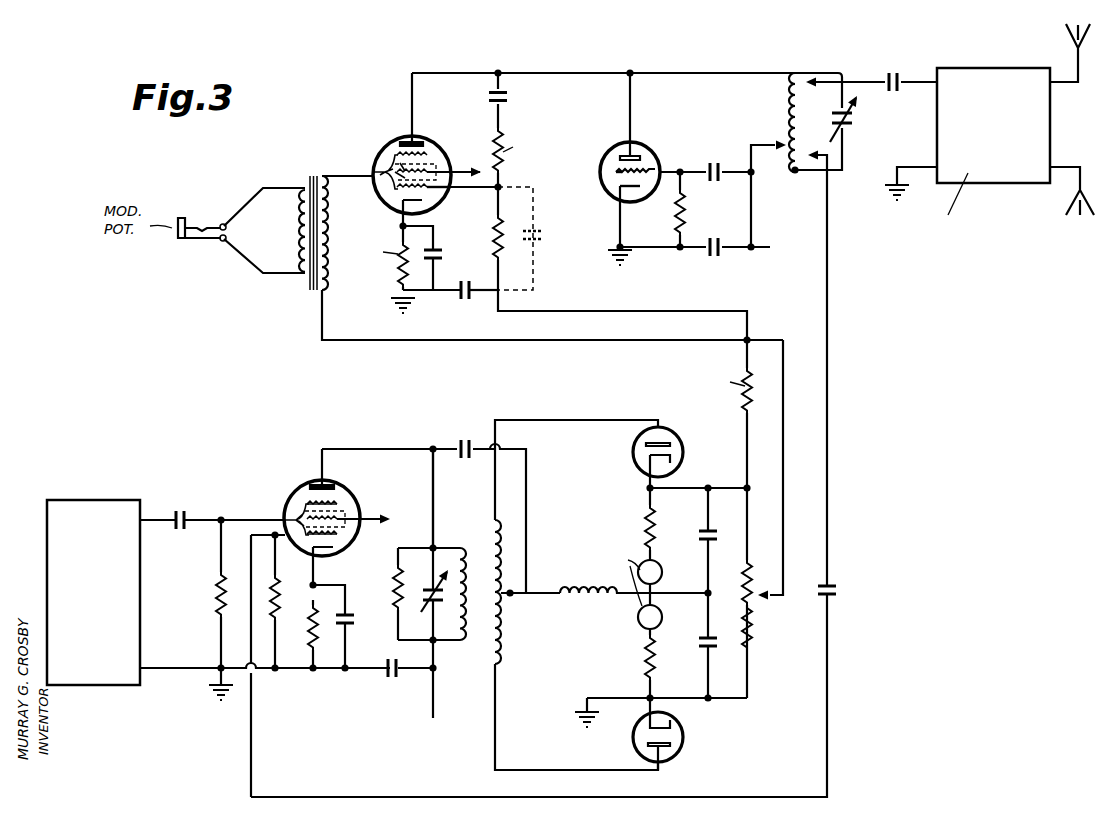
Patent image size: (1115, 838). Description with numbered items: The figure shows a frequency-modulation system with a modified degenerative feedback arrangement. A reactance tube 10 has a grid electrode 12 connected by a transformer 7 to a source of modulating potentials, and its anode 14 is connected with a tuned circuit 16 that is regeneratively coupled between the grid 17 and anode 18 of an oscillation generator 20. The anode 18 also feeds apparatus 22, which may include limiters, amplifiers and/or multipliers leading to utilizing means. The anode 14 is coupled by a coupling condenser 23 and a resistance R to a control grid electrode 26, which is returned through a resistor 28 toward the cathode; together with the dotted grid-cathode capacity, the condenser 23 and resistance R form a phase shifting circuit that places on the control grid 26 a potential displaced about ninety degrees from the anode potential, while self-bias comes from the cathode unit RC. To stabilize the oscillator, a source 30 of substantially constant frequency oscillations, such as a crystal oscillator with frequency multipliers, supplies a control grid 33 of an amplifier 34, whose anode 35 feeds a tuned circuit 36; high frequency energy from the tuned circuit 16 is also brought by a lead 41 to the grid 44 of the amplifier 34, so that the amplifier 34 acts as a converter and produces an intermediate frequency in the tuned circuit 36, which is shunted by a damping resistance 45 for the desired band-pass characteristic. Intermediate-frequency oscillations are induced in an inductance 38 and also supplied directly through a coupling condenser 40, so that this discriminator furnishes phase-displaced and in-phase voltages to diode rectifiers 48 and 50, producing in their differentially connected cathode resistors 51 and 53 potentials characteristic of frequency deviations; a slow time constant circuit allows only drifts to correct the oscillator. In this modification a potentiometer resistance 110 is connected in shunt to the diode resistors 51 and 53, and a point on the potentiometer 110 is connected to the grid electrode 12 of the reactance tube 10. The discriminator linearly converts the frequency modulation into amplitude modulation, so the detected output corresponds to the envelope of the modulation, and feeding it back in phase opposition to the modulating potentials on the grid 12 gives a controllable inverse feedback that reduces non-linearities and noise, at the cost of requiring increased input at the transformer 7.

The transformer 7 is at (308, 180).
The reactance tube 10 is at (397, 140).
The grid electrode 12 is at (392, 167).
The anode 14 is at (424, 143).
The tuned circuit 16 is at (830, 140).
The grid 17 is at (610, 187).
The anode 18 is at (613, 146).
The oscillation generator 20 is at (612, 170).
The apparatus 22 is at (983, 68).
The coupling condenser 23 is at (508, 97).
The control grid electrode 26 is at (430, 188).
The resistor 28 is at (497, 243).
The source of oscillations of substantially constant frequency 30 is at (93, 500).
The control grid 33 is at (300, 512).
The amplifier 34 is at (312, 487).
The anode 35 is at (338, 492).
The tuned circuit 36 is at (450, 622).
The inductance 38 is at (495, 526).
The coupling condenser 40 is at (465, 440).
The lead 41 is at (828, 486).
The grid 44 is at (342, 533).
The damping resistance 45 is at (397, 588).
The diode rectifier 48 is at (678, 440).
The diode rectifier 50 is at (643, 724).
The cathode resistor 51 is at (648, 516).
The cathode resistor 53 is at (645, 655).
The potentiometer resistance 110 is at (758, 616).